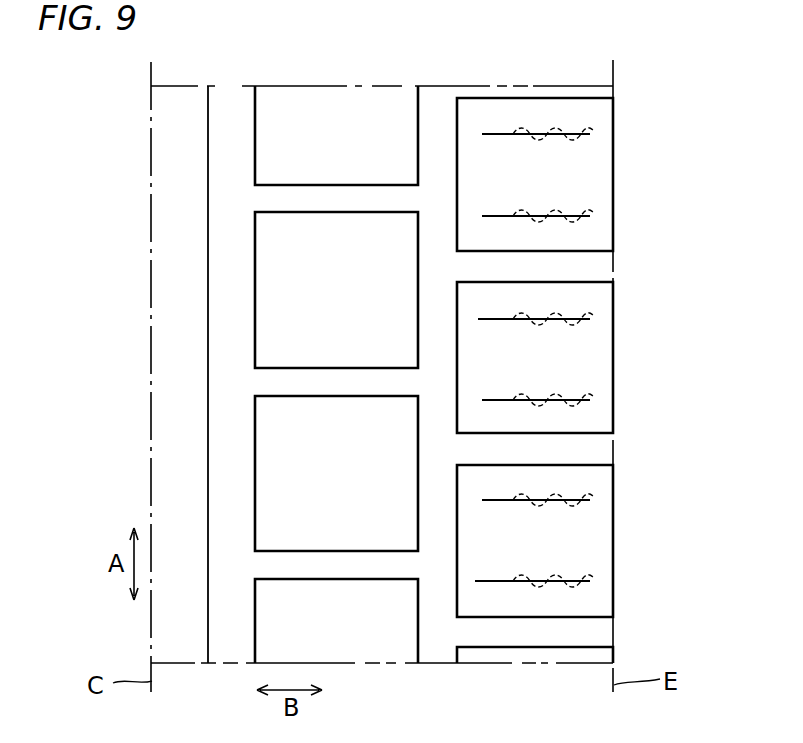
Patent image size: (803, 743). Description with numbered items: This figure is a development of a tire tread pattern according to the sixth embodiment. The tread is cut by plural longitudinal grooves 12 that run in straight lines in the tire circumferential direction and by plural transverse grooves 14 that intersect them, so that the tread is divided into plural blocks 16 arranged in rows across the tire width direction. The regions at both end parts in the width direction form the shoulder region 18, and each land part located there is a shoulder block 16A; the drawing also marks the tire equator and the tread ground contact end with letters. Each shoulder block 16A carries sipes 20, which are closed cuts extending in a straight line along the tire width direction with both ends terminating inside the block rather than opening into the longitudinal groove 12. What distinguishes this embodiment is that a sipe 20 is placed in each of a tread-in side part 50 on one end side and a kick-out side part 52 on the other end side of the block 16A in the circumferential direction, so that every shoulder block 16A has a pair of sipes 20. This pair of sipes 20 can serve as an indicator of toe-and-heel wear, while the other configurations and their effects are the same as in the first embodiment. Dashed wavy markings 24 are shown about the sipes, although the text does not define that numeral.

The longitudinal groove 12 is at (232, 117).
The transverse groove 14 is at (597, 267).
The block 16 is at (255, 272).
The shoulder block 16A is at (614, 165).
The shoulder region 18 is at (550, 84).
The sipe 20 is at (590, 216).
The wavy cut line 24 is at (548, 212).
The tread-in side part 50 is at (600, 240).
The kick-out side part 52 is at (600, 298).